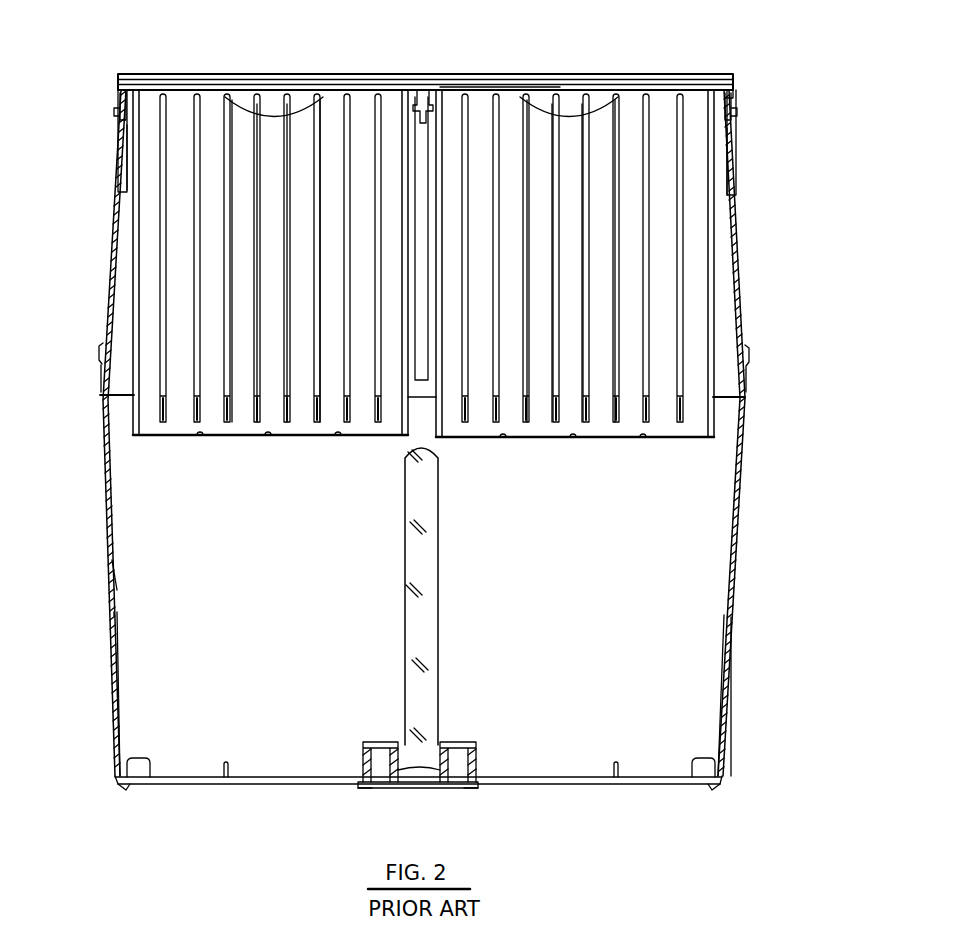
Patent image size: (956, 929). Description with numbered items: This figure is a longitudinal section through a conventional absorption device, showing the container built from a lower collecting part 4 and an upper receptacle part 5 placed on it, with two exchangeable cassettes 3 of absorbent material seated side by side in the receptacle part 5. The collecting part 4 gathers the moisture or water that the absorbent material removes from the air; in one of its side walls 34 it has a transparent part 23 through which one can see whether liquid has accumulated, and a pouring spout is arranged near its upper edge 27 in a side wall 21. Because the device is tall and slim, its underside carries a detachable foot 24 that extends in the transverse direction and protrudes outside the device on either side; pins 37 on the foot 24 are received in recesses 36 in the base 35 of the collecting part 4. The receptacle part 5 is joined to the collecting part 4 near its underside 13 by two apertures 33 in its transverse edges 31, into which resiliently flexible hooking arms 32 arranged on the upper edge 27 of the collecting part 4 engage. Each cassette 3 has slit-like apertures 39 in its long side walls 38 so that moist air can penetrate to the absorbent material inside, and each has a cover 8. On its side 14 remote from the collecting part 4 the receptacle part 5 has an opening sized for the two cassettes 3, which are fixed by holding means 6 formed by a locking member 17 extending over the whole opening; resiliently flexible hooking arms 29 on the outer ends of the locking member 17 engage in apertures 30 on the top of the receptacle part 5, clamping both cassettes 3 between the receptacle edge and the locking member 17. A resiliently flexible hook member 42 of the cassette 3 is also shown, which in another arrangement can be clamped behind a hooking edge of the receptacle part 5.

The exchangeable cassette 3 is at (320, 447).
The collecting part 4 is at (748, 528).
The receptacle part 5 is at (750, 262).
The holding means 6 is at (712, 76).
The cover 8 is at (220, 86).
The underside 13 is at (726, 386).
The side remote from collecting part 14 is at (732, 98).
The locking member 17 is at (522, 88).
The side wall 21 is at (105, 575).
The transparent part 23 is at (424, 622).
The detachable foot 24 is at (422, 792).
The upper edge 27 is at (122, 412).
The hooking arms 29 is at (112, 135).
The apertures 30 is at (112, 147).
The transverse edges 31 is at (82, 270).
The hooking arms 32 is at (101, 368).
The apertures 33 is at (100, 346).
The side wall 34 is at (186, 652).
The base 35 is at (240, 777).
The recesses 36 is at (383, 742).
The pins 37 is at (376, 790).
The long side walls 38 is at (288, 413).
The slit-like apertures 39 is at (226, 422).
The hook member 42 is at (124, 106).